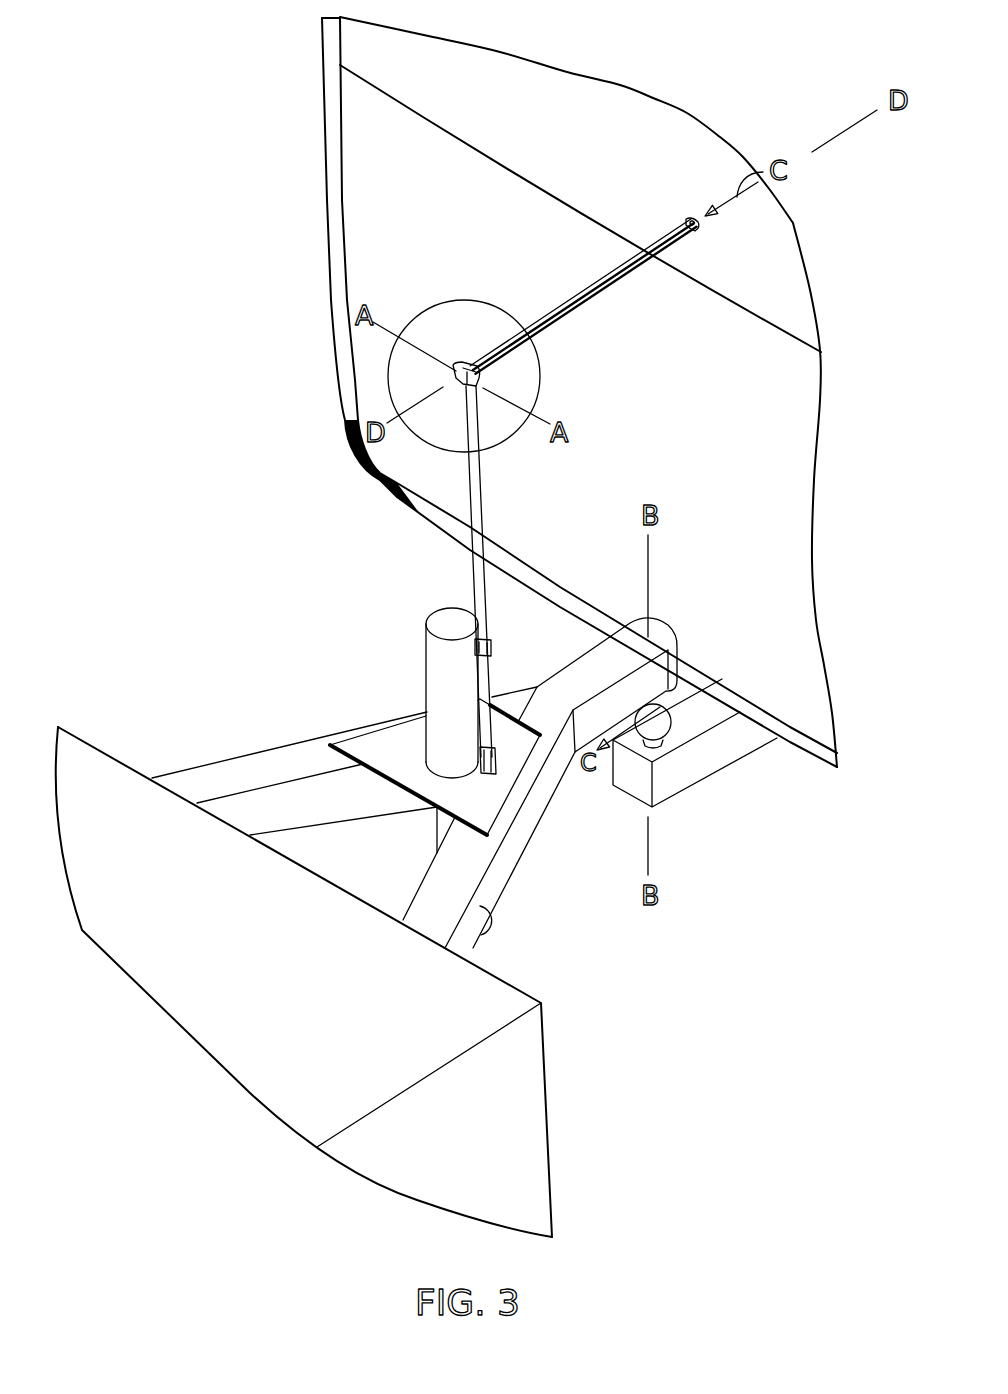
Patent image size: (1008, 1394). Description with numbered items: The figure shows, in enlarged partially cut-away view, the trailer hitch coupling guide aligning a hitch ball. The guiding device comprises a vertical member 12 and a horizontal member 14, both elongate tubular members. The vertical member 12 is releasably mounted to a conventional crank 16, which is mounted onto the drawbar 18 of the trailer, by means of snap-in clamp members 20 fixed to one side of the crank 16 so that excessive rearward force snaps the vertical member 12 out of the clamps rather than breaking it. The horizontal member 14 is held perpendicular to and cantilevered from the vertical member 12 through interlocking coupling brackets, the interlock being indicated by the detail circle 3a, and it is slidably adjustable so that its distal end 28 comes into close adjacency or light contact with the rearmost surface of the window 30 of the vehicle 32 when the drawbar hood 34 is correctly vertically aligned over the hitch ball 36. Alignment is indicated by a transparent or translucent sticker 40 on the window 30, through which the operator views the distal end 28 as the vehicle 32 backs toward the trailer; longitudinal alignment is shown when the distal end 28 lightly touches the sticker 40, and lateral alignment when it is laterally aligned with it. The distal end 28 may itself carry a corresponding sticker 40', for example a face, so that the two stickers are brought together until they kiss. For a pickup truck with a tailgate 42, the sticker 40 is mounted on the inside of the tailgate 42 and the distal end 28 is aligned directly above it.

The vertical member 12 is at (487, 513).
The horizontal member 14 is at (607, 271).
The crank 16 is at (428, 682).
The drawbar 18 is at (500, 875).
The snap-in clamp members 20 is at (492, 648).
The distal end 28 is at (674, 243).
The window 30 is at (580, 184).
The vehicle 32 is at (327, 228).
The drawbar hood 34 is at (670, 627).
The hitch ball 36 is at (670, 697).
The sticker 40 is at (781, 217).
The corresponding sticker 40' is at (610, 166).
The tailgate 42 is at (693, 441).
The detail area 3a is at (452, 298).